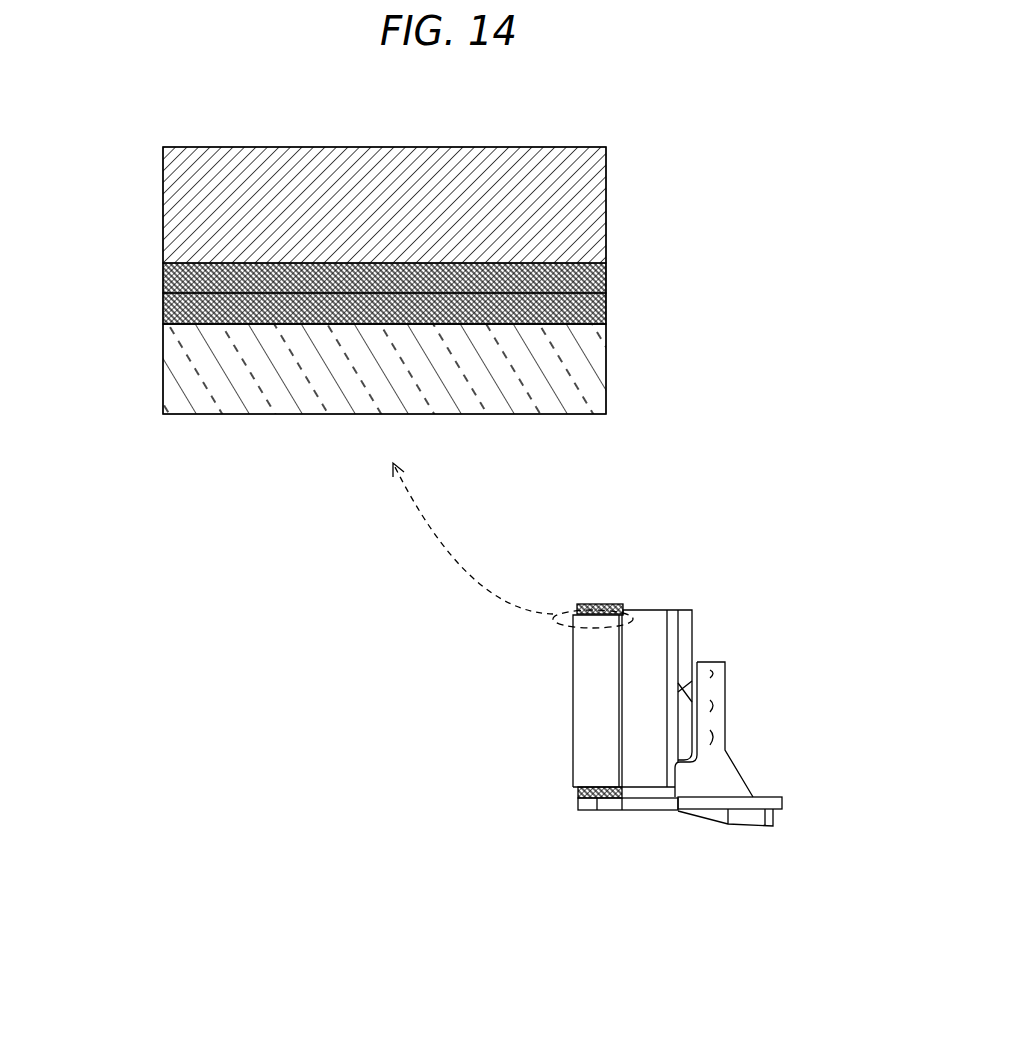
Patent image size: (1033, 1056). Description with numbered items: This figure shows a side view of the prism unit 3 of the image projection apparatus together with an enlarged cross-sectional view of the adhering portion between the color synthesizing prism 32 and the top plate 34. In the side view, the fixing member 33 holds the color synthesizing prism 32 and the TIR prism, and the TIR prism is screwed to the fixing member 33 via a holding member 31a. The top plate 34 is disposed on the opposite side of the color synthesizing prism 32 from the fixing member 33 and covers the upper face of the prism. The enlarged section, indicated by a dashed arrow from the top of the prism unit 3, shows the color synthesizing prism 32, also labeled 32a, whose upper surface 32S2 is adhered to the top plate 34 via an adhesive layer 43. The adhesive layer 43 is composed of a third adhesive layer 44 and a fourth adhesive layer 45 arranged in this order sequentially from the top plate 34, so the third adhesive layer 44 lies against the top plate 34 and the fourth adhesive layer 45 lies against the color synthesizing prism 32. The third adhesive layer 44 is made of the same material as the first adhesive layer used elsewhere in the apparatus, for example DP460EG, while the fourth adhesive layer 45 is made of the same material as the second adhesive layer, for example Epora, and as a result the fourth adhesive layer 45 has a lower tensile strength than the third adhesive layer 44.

The prism unit 3 is at (762, 577).
The holding member 31a is at (725, 768).
The color synthesizing prism 32 is at (436, 467).
The substrate surface 32a is at (580, 370).
The second surface of substrate 32S2 is at (163, 320).
The fixing member 33 is at (608, 811).
The top plate 34 is at (580, 213).
The adhesive layer 43 is at (439, 294).
The third adhesive layer 44 is at (607, 278).
The fourth adhesive layer 45 is at (607, 316).